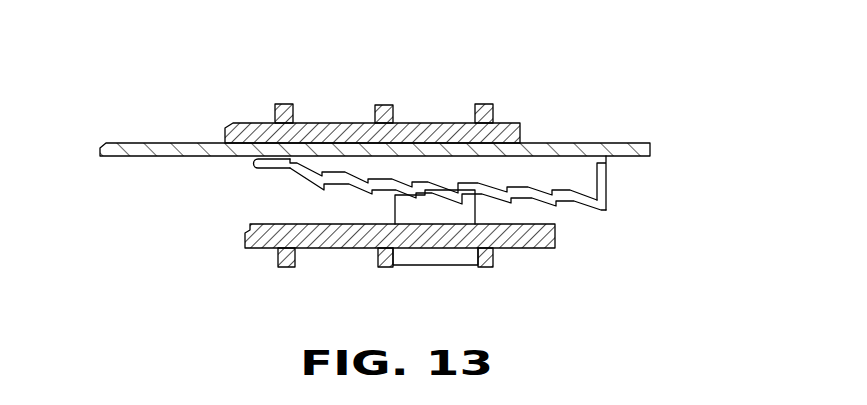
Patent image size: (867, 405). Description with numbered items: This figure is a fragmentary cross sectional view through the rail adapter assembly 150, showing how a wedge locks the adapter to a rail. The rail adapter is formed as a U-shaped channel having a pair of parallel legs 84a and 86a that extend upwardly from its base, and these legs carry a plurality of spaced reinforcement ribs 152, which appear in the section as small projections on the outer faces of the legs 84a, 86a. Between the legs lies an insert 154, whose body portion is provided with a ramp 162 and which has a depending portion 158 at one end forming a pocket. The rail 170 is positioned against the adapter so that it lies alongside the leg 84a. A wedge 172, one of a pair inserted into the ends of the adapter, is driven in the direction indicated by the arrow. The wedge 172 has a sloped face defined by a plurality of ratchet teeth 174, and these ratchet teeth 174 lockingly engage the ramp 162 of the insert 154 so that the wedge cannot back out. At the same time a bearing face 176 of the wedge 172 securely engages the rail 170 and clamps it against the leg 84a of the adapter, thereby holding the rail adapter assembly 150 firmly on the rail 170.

The rail adapter assembly 150 is at (605, 100).
The reinforcement ribs 152 is at (283, 104).
The insert 154 is at (395, 208).
The depending portion 158 is at (432, 266).
The ramp 162 is at (470, 191).
The rail 170 is at (168, 143).
The wedge 172 is at (620, 183).
The ratchet teeth 174 is at (443, 195).
The bearing face 176 is at (582, 143).
The leg 84a is at (345, 123).
The leg 86a is at (312, 249).